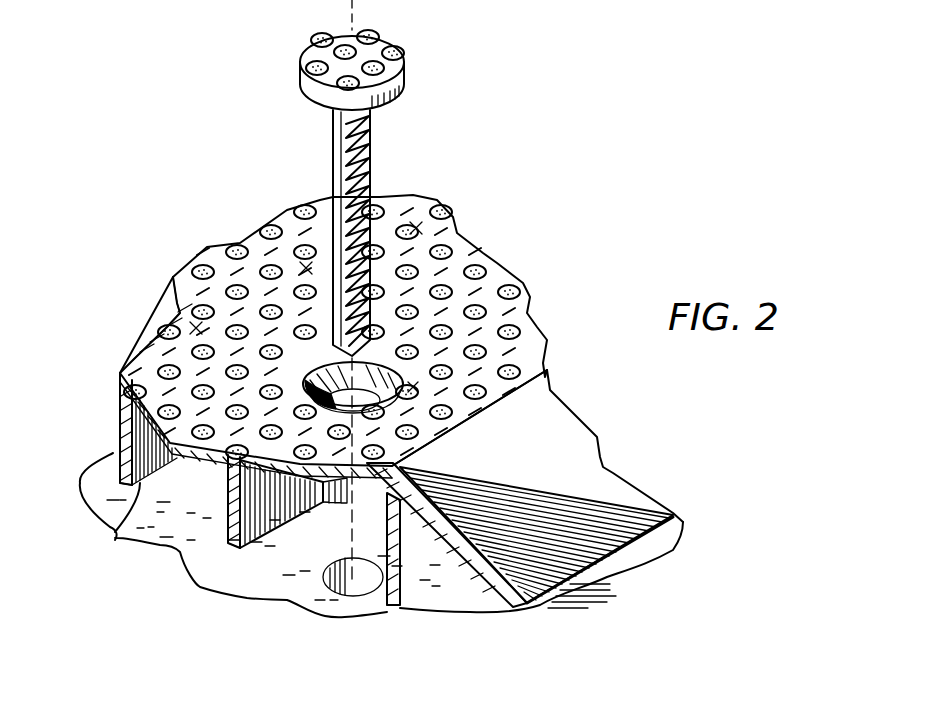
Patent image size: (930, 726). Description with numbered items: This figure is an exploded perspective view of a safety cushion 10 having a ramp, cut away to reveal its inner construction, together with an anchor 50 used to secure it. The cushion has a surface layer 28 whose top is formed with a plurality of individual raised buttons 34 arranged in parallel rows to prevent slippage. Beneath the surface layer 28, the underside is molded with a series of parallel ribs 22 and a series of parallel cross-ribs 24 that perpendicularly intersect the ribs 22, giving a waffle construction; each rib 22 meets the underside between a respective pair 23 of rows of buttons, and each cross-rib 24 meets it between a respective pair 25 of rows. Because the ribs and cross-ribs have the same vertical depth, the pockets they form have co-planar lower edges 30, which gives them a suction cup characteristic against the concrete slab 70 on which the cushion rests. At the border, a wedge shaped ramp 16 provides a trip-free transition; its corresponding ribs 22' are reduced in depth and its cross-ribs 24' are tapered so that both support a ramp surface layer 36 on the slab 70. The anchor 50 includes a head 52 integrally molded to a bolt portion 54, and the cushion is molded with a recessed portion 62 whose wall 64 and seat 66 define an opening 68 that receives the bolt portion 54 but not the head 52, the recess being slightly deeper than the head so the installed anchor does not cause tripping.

The safety cushion 10 is at (190, 245).
The wedge shaped ramp 16 is at (607, 483).
The ribs 22 is at (149, 460).
The ribs of the ramp 22' is at (412, 568).
The pair of parallel rows of raised buttons 23 is at (413, 223).
The cross-ribs 24 is at (293, 504).
The cross-ribs of the ramp 24' is at (447, 553).
The pair of parallel rows 25 is at (166, 327).
The surface layer 28 is at (118, 382).
The co-planar lower edges 30 is at (115, 534).
The raised buttons 34 is at (483, 260).
The ramp surface layer 36 is at (560, 398).
The anchor 50 is at (413, 58).
The head 52 is at (300, 88).
The bolt portion 54 is at (368, 116).
The recessed portion 62 is at (405, 358).
The wall 64 is at (372, 173).
The seat 66 is at (364, 424).
The opening 68 is at (447, 437).
The concrete slab 70 is at (160, 547).